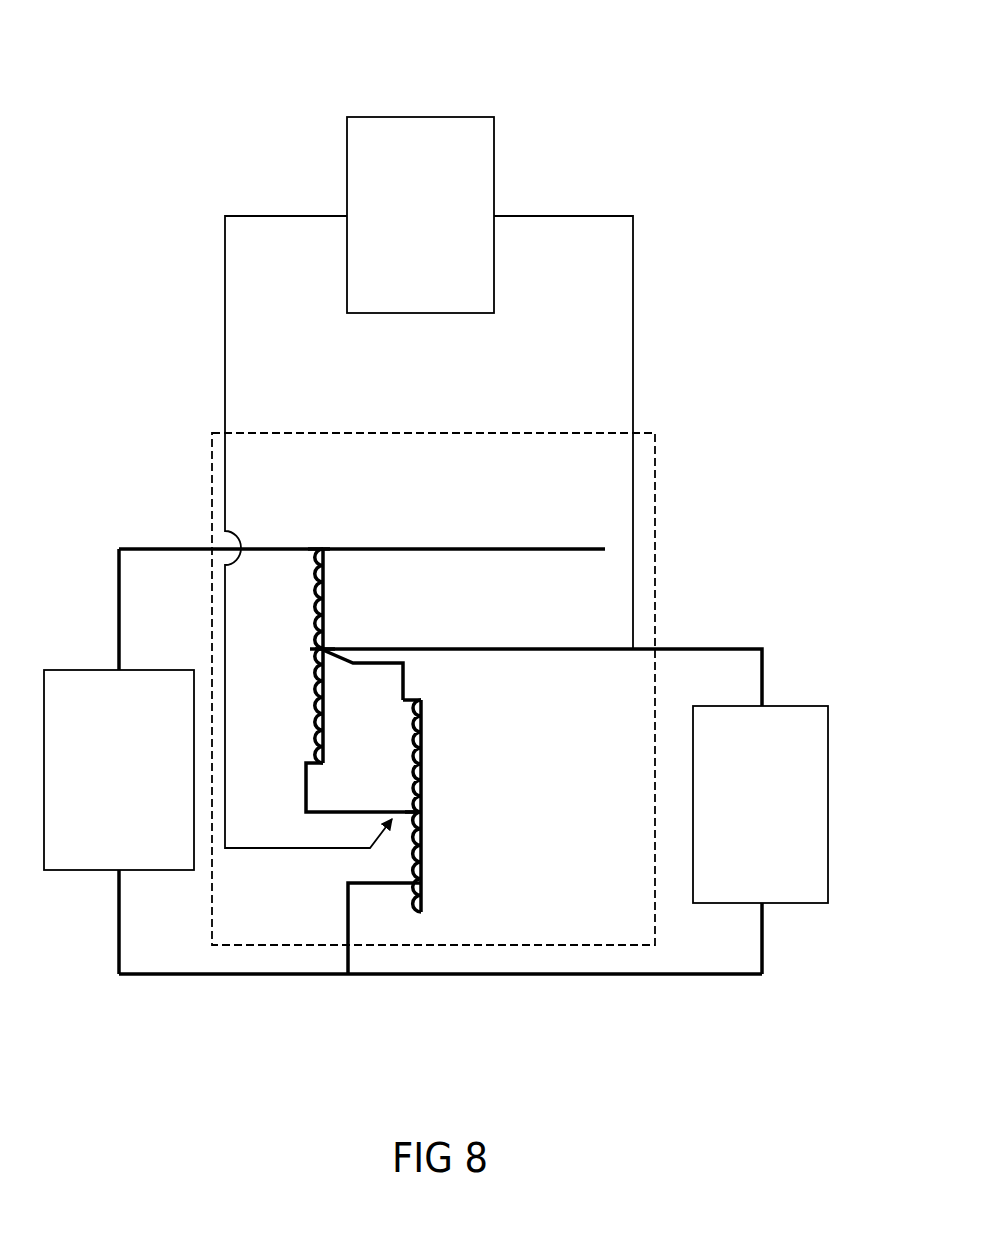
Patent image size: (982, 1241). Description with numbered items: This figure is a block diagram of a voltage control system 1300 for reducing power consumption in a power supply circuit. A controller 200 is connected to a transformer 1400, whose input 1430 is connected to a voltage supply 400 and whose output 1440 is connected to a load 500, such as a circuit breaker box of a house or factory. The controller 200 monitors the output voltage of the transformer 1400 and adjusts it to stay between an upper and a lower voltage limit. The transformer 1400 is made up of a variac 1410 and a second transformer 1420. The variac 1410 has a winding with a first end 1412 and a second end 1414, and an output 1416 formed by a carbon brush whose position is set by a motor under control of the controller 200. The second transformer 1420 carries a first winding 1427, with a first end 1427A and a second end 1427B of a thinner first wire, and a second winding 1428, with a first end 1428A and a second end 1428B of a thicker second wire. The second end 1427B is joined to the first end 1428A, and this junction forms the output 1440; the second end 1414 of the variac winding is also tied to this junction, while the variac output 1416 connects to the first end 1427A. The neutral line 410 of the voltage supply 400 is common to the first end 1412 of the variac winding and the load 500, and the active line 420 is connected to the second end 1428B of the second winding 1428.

The voltage control system 1300 is at (138, 118).
The controller 200 is at (400, 270).
The voltage supply 400 is at (97, 825).
The load 500 is at (741, 860).
The transformer 1400 is at (460, 470).
The input 1430 is at (207, 548).
The second transformer 1420 is at (369, 596).
The second winding 1428 is at (305, 612).
The first end of the second wire 1428A is at (327, 640).
The second end of the second wire 1428B is at (313, 548).
The first winding 1427 is at (329, 713).
The first end of the first wire 1427A is at (316, 767).
The second end of the first wire 1427B is at (315, 651).
The variac 1410 is at (439, 750).
The second end of the variac winding 1414 is at (405, 700).
The output of the variac 1416 is at (419, 810).
The first end of the variac winding 1412 is at (423, 893).
The active line 420 is at (118, 570).
The neutral line 410 is at (118, 952).
The output 1440 is at (657, 645).